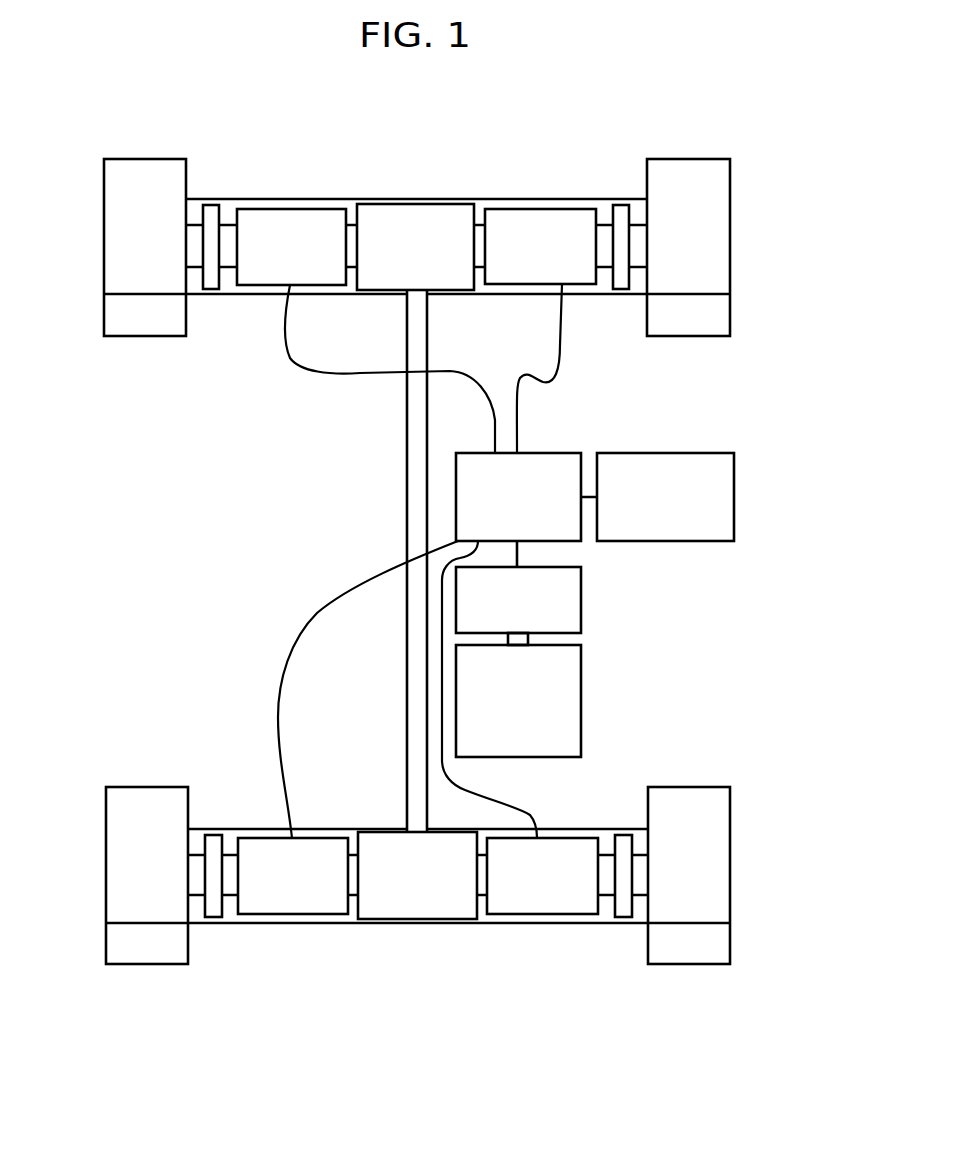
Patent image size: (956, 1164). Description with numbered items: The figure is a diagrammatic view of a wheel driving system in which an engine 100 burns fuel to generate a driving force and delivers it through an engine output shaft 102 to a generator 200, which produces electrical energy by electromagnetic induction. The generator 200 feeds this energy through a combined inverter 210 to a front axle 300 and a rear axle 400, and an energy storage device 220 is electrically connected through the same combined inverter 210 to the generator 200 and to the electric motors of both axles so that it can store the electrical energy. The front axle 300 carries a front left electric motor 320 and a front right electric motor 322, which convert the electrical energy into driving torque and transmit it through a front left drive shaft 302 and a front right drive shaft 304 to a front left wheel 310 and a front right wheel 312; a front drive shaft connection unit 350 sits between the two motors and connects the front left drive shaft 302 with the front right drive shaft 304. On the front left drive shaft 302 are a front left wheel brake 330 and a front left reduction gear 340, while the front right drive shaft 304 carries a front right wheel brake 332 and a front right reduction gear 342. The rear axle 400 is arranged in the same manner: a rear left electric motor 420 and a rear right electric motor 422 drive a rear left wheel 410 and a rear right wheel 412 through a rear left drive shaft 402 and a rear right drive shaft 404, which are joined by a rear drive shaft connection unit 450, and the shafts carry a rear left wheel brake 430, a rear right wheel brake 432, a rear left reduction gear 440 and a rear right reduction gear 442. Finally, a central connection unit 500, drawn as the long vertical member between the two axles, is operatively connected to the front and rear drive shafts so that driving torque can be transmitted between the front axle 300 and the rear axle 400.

The engine 100 is at (572, 702).
The engine output shaft 102 is at (517, 640).
The generator 200 is at (572, 600).
The combined inverter 210 is at (567, 462).
The energy storage device 220 is at (723, 493).
The front axle 300 is at (476, 197).
The front left drive shaft 302 is at (229, 264).
The front right drive shaft 304 is at (605, 264).
The front left wheel 310 is at (108, 314).
The front right wheel 312 is at (725, 313).
The front left electric motor 320 is at (290, 212).
The front right electric motor 322 is at (538, 212).
The front left wheel brake 330 is at (213, 208).
The front right wheel brake 332 is at (620, 208).
The front left reduction gear 340 is at (108, 246).
The front right reduction gear 342 is at (725, 245).
The front drive shaft connection unit 350 is at (417, 213).
The rear axle 400 is at (480, 925).
The rear left drive shaft 402 is at (233, 893).
The rear right drive shaft 404 is at (607, 893).
The rear left wheel 410 is at (110, 942).
The rear right wheel 412 is at (725, 943).
The rear left electric motor 420 is at (295, 893).
The rear right electric motor 422 is at (548, 893).
The rear left wheel brake 430 is at (214, 838).
The rear right wheel brake 432 is at (620, 838).
The rear left reduction gear 440 is at (110, 874).
The rear right reduction gear 442 is at (725, 875).
The rear drive shaft connection unit 450 is at (410, 893).
The central connection unit 500 is at (413, 462).